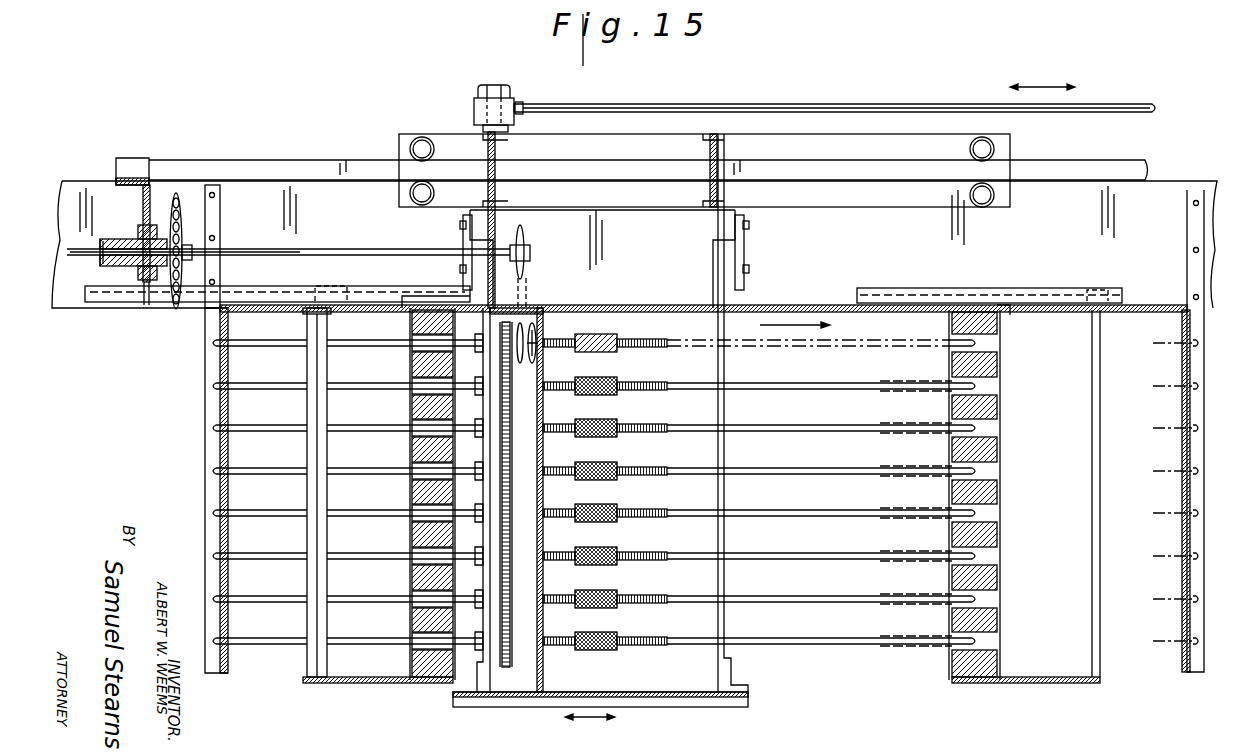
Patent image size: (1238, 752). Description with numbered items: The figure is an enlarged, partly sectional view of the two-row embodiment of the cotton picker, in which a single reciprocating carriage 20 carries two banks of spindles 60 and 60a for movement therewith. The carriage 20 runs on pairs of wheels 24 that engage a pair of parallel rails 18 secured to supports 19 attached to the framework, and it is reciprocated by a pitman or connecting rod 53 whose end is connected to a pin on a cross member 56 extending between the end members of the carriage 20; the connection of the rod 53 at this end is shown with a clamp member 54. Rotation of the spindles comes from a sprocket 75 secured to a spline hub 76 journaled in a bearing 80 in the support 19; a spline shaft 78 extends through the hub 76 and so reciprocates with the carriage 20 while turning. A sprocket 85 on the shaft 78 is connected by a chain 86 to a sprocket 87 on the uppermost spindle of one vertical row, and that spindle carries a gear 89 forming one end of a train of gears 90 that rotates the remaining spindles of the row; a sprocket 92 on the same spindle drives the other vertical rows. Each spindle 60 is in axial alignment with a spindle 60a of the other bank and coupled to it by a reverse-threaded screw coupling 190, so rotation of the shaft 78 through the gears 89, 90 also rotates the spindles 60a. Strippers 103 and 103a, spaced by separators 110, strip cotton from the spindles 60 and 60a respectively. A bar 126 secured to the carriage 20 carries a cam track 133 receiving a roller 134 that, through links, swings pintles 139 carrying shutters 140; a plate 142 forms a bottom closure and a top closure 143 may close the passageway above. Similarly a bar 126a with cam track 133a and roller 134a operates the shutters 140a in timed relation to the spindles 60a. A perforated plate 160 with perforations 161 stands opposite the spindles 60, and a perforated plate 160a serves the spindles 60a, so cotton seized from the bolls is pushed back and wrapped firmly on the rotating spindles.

The rails 18 is at (1058, 180).
The supports 19 is at (128, 180).
The carriage 20 is at (445, 136).
The wheels 24 is at (418, 200).
The pitman or connecting rod 53 is at (693, 105).
The clamp bolt 54 is at (512, 100).
The cross member 56 is at (497, 158).
The spindles 60 is at (391, 468).
The spindles 60a is at (812, 398).
The sprocket 75 is at (176, 195).
The spline hub 76 is at (100, 243).
The spline shaft 78 is at (80, 256).
The bearing 80 is at (122, 238).
The sprocket 85 is at (525, 240).
The chain 86 is at (528, 288).
The sprocket 87 is at (528, 306).
The gear 89 is at (503, 356).
The train of gears 90 is at (508, 456).
The sprocket 92 is at (545, 326).
The strippers 103 is at (428, 423).
The strippers 103a is at (993, 470).
The separators 110 is at (416, 580).
The bar 126 is at (392, 290).
The bar 126a is at (917, 290).
The cam track 133 is at (273, 294).
The cam track 133a is at (1040, 293).
The roller 134 is at (345, 278).
The stop 134a is at (1106, 292).
The pintle 139 is at (306, 368).
The shutter or gate 140 is at (328, 368).
The shutters 140a is at (1093, 488).
The plate 142 is at (380, 682).
The top closure 143 is at (403, 308).
The plate 160 is at (215, 410).
The perforated plate 160a is at (1183, 452).
The perforations 161 is at (215, 487).
The reverse-threaded screw coupling 190 is at (614, 353).